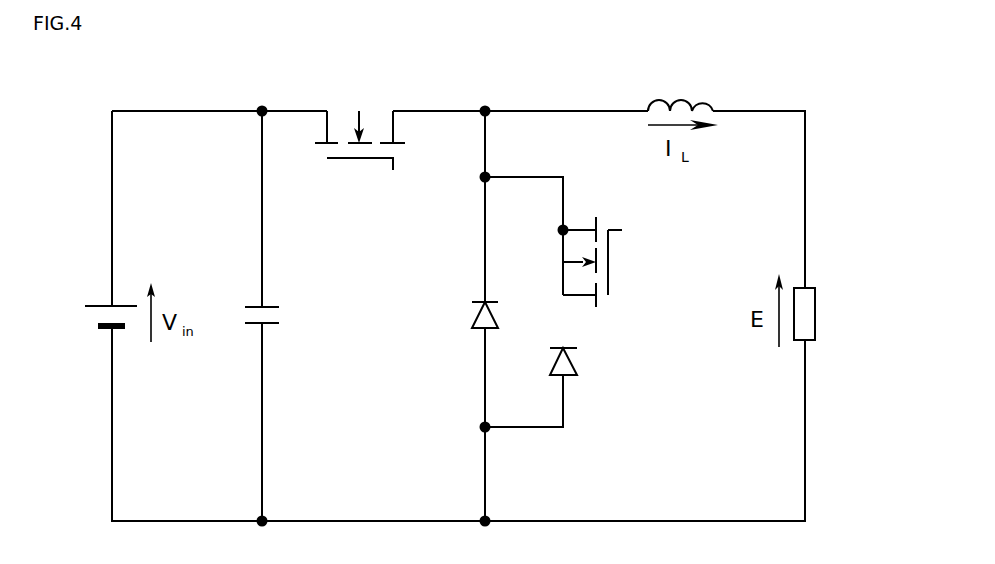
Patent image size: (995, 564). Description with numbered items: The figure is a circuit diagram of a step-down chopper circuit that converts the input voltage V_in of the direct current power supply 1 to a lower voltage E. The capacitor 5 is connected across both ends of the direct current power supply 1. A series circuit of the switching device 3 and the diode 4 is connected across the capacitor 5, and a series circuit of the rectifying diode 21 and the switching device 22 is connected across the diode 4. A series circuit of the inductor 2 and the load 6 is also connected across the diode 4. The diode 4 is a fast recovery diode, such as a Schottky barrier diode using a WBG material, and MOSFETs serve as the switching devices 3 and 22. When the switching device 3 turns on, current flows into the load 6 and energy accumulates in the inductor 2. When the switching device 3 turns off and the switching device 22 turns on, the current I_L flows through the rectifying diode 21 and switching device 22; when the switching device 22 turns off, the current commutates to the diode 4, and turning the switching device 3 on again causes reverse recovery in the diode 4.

The direct current power supply 1 is at (99, 299).
The inductor 2 is at (671, 92).
The switching device 3 is at (350, 98).
The diode 4 is at (473, 293).
The capacitor 5 is at (250, 301).
The load 6 is at (804, 310).
The rectifying diode 21 is at (582, 358).
The switching device 22 is at (627, 257).